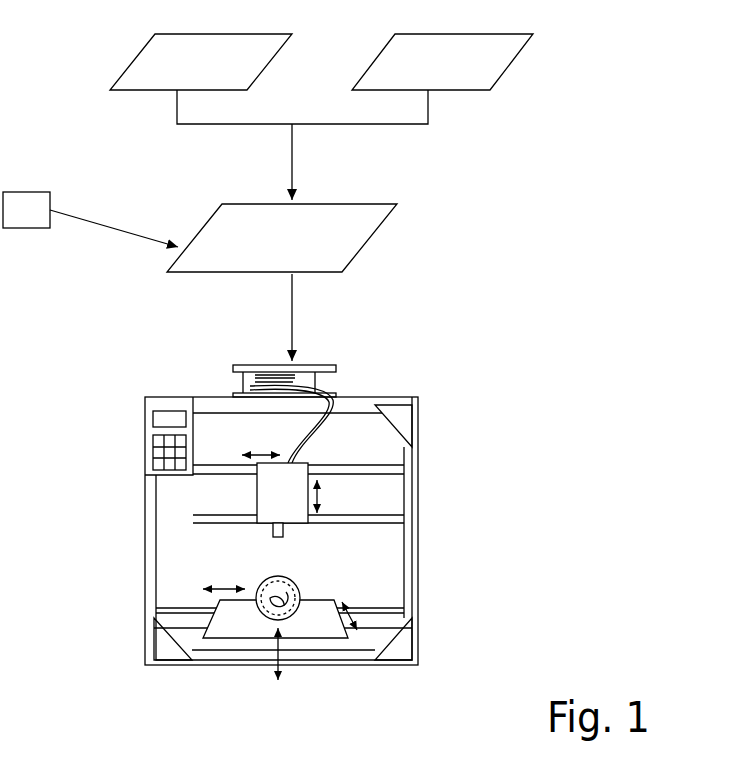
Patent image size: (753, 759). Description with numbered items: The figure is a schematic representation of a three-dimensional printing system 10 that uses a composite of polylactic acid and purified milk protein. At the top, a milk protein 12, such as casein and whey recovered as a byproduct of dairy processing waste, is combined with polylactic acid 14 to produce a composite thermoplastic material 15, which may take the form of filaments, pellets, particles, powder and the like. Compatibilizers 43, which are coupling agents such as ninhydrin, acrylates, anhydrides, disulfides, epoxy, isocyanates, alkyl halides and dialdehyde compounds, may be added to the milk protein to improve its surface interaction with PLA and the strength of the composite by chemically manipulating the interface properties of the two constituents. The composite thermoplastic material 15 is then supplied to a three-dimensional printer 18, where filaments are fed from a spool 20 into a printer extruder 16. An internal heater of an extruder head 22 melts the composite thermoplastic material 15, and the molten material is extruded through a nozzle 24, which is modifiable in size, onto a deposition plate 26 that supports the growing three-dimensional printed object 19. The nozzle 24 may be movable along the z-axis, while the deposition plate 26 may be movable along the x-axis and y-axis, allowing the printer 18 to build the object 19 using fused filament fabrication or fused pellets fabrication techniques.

The three-dimensional printing system 10 is at (664, 70).
The milk protein 12 is at (134, 54).
The polylactic acid 14 is at (513, 63).
The composite thermoplastic material 15 is at (390, 213).
The printer extruder 16 is at (233, 497).
The three-dimensional printer 18 is at (436, 410).
The three-dimensional printed object 19 is at (287, 577).
The spool 20 is at (317, 367).
The extruder head 22 is at (283, 498).
The nozzle 24 is at (284, 534).
The deposition plate 26 is at (323, 625).
The compatibilizers 43 is at (90, 219).